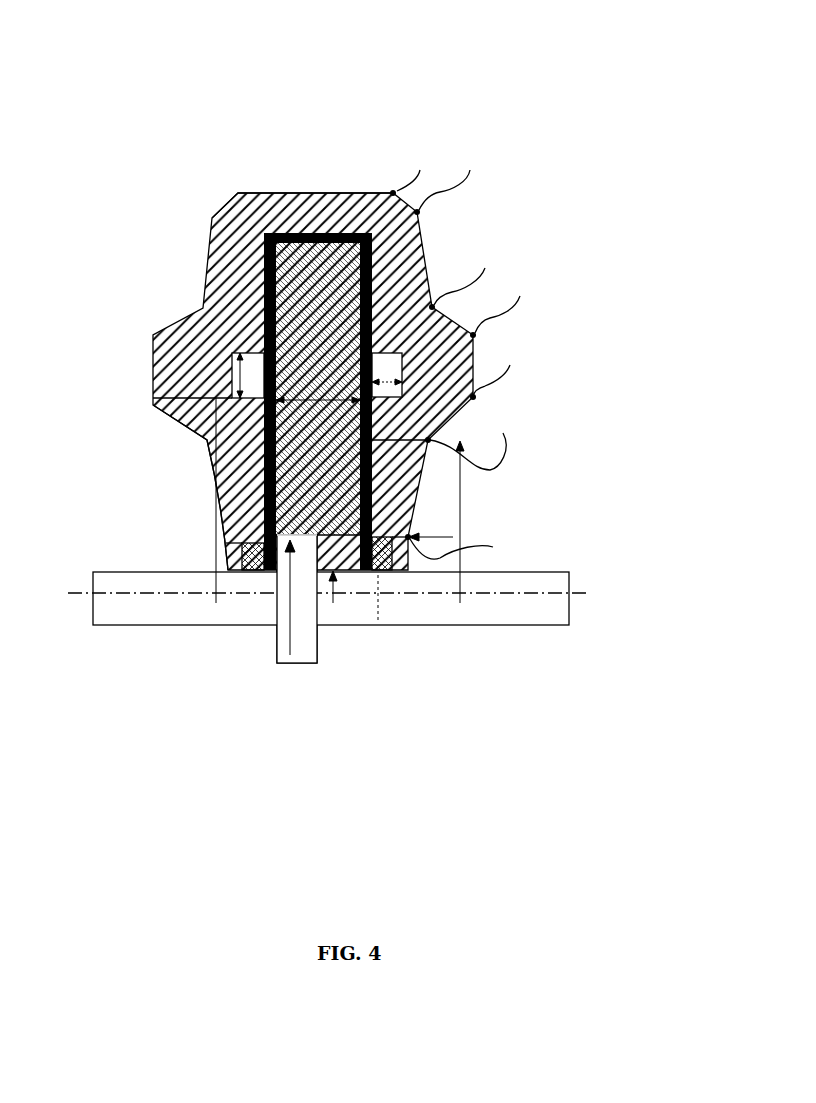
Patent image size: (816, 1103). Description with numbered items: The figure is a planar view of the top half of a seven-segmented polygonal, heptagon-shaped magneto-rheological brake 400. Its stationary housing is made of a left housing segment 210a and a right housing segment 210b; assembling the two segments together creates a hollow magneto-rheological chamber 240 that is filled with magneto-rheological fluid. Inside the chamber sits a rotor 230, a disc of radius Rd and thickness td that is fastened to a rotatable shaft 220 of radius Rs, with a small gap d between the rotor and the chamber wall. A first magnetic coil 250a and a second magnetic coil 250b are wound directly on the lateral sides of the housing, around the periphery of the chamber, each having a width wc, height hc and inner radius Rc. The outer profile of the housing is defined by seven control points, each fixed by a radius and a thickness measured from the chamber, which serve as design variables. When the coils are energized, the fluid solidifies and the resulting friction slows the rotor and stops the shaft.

The seven-segmented polygonal (heptagon) MRB 400 is at (384, 105).
The left housing segment 210a is at (217, 483).
The right housing segment 210b is at (425, 257).
The rotatable shaft 220 is at (170, 603).
The rotor 230 is at (309, 277).
The magneto-rheological chamber 240 is at (262, 225).
The first magnetic coil 250a is at (190, 358).
The second magnetic coil 250b is at (410, 365).